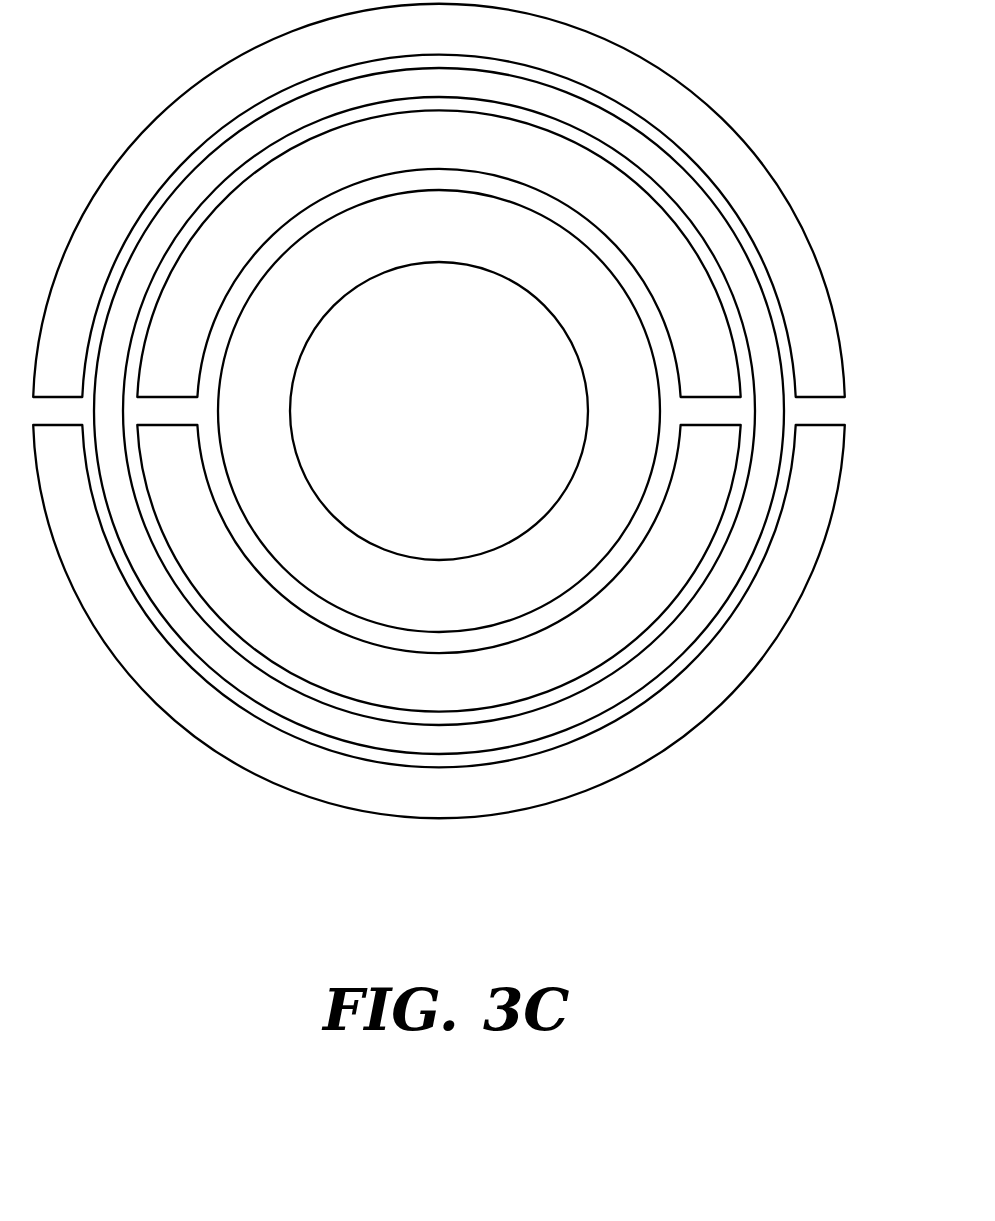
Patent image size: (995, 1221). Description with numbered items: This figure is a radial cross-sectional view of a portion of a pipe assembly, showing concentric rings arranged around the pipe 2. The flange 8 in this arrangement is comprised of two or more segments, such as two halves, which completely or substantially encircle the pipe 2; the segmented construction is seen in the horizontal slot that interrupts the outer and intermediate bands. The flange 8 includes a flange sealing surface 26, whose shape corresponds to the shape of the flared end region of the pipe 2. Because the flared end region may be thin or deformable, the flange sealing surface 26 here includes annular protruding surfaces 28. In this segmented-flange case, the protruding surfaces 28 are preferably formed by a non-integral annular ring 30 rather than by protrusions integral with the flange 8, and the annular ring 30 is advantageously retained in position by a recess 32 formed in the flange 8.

The pipe 2 is at (561, 575).
The flange 8 is at (822, 319).
The flange sealing surface 26 is at (390, 697).
The protruding surfaces 28 is at (487, 752).
The non-integral annular ring 30 is at (338, 728).
The recess 32 is at (262, 715).